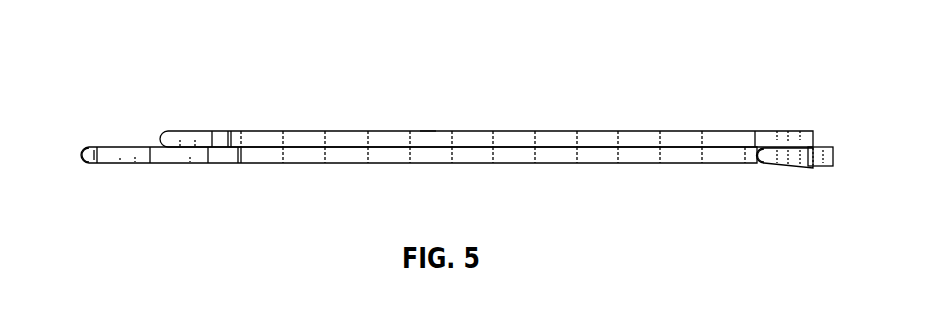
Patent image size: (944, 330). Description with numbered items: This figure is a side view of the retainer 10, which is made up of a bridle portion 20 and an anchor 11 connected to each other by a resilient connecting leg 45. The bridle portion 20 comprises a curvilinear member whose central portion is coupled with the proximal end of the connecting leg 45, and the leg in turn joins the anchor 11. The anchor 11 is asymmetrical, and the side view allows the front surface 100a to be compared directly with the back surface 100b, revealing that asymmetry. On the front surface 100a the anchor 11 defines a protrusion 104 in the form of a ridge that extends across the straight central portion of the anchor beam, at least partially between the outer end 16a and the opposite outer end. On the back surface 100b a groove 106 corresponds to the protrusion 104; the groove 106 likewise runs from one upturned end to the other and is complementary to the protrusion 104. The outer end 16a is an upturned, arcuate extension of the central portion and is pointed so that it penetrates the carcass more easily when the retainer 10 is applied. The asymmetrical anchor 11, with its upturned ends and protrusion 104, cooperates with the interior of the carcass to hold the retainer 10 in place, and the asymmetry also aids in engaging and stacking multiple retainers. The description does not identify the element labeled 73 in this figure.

The retainer 10 is at (231, 41).
The bridle portion 20 is at (232, 116).
The front surface 100a is at (381, 119).
The back surface 100b is at (599, 176).
The resilient connecting leg 45 is at (427, 131).
The anchor 11 is at (768, 129).
The protrusion 104 is at (787, 130).
The outer end 16a is at (762, 158).
The groove 106 is at (798, 173).
The end cap 73 is at (90, 163).